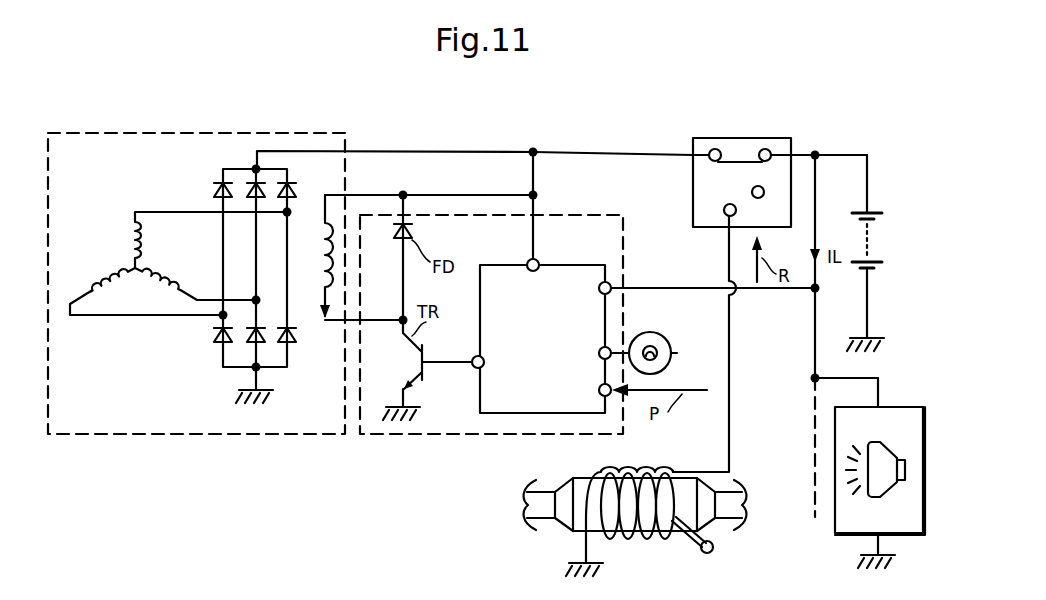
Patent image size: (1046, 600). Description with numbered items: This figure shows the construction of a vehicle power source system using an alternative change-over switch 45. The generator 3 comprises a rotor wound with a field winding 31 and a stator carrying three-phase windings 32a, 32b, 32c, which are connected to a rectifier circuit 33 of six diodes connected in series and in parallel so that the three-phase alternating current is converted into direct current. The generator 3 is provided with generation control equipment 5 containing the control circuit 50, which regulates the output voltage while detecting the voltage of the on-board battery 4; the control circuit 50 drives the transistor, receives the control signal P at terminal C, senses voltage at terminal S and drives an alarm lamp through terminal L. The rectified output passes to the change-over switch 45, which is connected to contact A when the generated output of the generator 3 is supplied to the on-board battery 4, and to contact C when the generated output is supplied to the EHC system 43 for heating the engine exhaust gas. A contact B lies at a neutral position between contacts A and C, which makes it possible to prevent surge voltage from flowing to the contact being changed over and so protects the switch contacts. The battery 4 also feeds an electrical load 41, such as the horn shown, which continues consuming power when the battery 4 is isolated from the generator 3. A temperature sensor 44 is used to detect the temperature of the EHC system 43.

The generator 3 is at (168, 132).
The rectifier circuit 33 is at (210, 196).
The three-phase winding 32a is at (124, 232).
The three-phase winding 32b is at (148, 270).
The three-phase winding 32c is at (104, 272).
The field winding 31 is at (354, 194).
The generation control equipment 5 is at (438, 440).
The control circuit 50 is at (516, 262).
The change-over switch 45 is at (780, 138).
The on-board battery 4 is at (880, 212).
The electrical load 41 is at (914, 406).
The EHC system 43 is at (642, 470).
The temperature sensor 44 is at (688, 553).